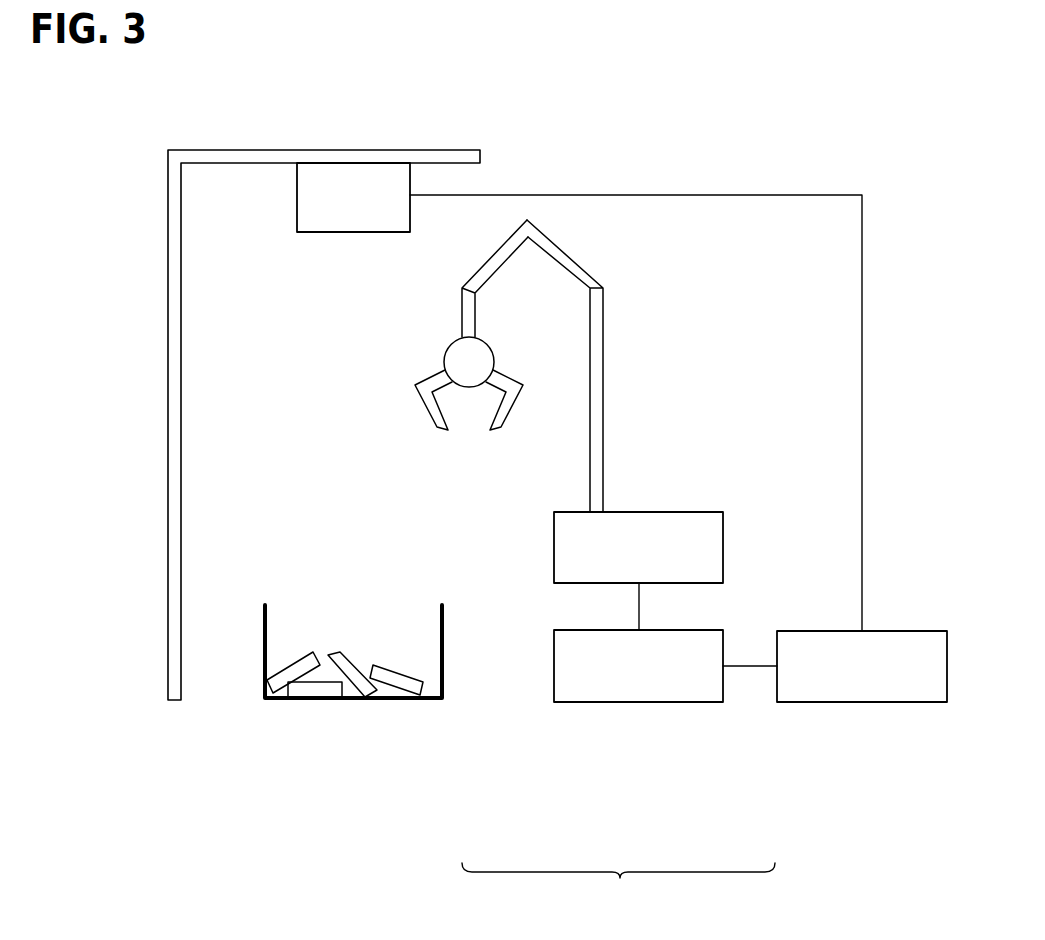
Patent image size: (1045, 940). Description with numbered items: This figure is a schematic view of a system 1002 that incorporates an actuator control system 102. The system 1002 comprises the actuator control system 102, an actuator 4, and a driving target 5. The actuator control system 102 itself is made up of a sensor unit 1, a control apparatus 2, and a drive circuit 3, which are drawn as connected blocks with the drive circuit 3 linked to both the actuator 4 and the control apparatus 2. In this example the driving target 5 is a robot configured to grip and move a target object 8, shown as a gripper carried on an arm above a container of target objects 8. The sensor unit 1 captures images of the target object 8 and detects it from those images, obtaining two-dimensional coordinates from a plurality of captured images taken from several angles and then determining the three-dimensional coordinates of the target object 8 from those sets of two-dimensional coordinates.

The system 1002 is at (767, 147).
The sensor unit 1 is at (370, 233).
The driving target 5 is at (493, 360).
The actuator 4 is at (660, 511).
The drive circuit 3 is at (645, 702).
The control apparatus 2 is at (812, 702).
The target object 8 is at (343, 655).
The actuator control system 102 is at (618, 888).